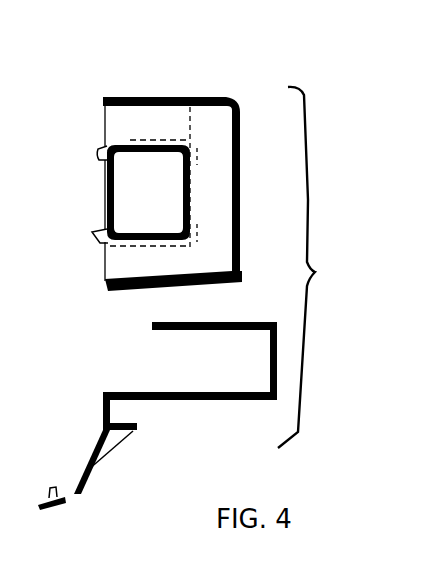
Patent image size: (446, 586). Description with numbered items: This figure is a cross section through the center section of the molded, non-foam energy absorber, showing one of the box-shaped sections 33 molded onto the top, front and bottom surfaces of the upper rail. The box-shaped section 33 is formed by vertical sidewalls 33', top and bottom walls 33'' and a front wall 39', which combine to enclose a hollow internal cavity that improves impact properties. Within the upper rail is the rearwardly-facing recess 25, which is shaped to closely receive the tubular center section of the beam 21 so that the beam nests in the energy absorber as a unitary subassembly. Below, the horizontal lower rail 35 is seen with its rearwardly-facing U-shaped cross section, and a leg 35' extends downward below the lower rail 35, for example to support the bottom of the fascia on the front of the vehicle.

The box-shaped section 33 is at (223, 245).
The vertical sidewall 33' is at (167, 77).
The top and bottom walls 33'' is at (146, 199).
The front wall 39' is at (260, 191).
The beam 21 is at (108, 193).
The rearwardly-facing recess 25 is at (149, 157).
The lower rail 35 is at (190, 360).
The leg 35' is at (88, 494).